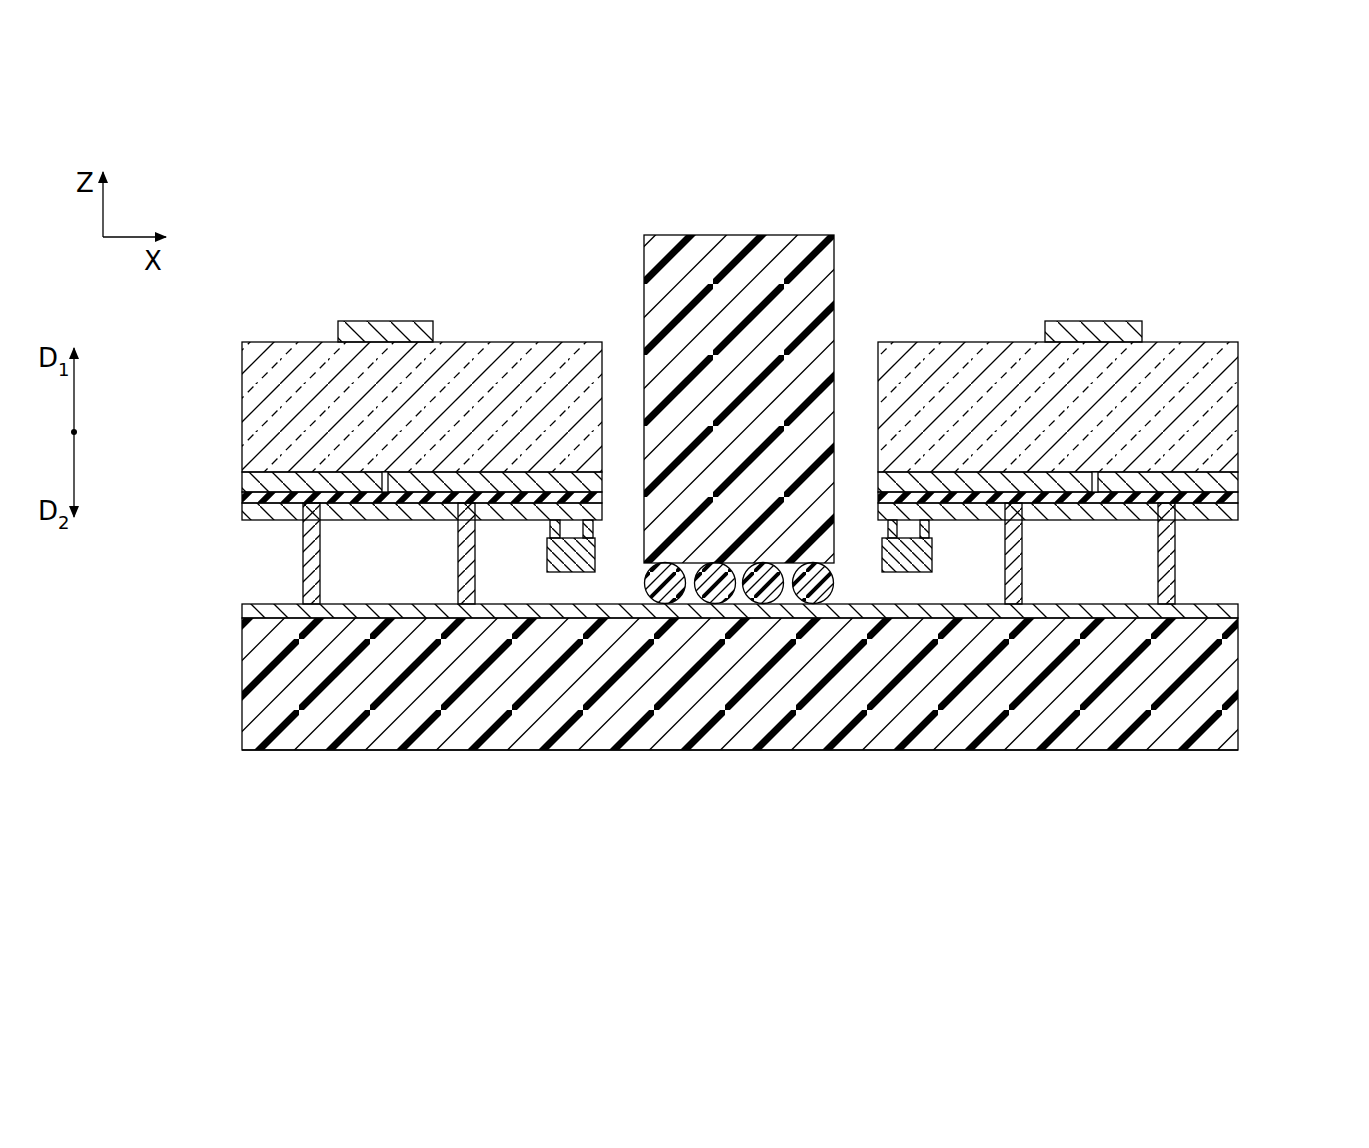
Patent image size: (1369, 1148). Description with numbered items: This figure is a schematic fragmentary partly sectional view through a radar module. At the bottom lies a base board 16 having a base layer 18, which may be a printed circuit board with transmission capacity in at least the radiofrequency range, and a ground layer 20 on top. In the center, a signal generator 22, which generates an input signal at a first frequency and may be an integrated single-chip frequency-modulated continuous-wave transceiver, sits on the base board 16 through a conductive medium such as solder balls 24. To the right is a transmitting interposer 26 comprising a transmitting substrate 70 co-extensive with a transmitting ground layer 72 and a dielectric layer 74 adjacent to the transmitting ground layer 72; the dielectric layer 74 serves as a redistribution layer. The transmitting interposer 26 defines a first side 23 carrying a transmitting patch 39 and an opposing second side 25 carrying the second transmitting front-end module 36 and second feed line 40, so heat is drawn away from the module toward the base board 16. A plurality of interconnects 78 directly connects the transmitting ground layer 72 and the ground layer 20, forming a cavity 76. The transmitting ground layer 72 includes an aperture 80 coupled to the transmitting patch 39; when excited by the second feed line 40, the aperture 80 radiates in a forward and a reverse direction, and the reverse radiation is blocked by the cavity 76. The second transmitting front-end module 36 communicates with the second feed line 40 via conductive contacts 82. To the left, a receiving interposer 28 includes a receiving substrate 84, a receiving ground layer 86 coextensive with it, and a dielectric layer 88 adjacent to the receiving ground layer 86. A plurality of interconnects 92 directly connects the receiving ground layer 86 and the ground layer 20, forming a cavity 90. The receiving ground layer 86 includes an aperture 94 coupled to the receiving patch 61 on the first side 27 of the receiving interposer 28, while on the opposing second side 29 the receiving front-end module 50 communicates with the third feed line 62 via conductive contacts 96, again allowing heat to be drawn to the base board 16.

The base board 16 is at (203, 605).
The base layer 18 is at (1160, 752).
The ground layer 20 is at (1060, 605).
The signal generator 22 is at (700, 232).
The first side 23 is at (1205, 310).
The solder balls 24 is at (650, 585).
The second side 25 is at (1290, 528).
The transmitting interposer 26 is at (1313, 341).
The first side 27 is at (290, 310).
The receiving interposer 28 is at (153, 345).
The second side 29 is at (195, 565).
The second transmitting front-end module 36 is at (905, 573).
The transmitting patch 39 is at (1095, 320).
The second feed line 40 is at (1215, 522).
The receiving front-end module 50 is at (560, 573).
The receiving patch 61 is at (385, 320).
The third feed line 62 is at (242, 512).
The transmitting substrate 70 is at (1014, 431).
The transmitting ground layer 72 is at (1228, 480).
The dielectric layer 74 is at (1238, 498).
The cavity 76 is at (1130, 540).
The interconnects 78 is at (1022, 560).
The aperture 80 is at (1093, 475).
The conductive contacts 82 is at (932, 530).
The receiving substrate 84 is at (436, 421).
The receiving ground layer 86 is at (242, 480).
The dielectric layer 88 is at (242, 497).
The cavity 90 is at (345, 527).
The interconnects 92 is at (320, 565).
The aperture 94 is at (385, 475).
The conductive contacts 96 is at (548, 530).